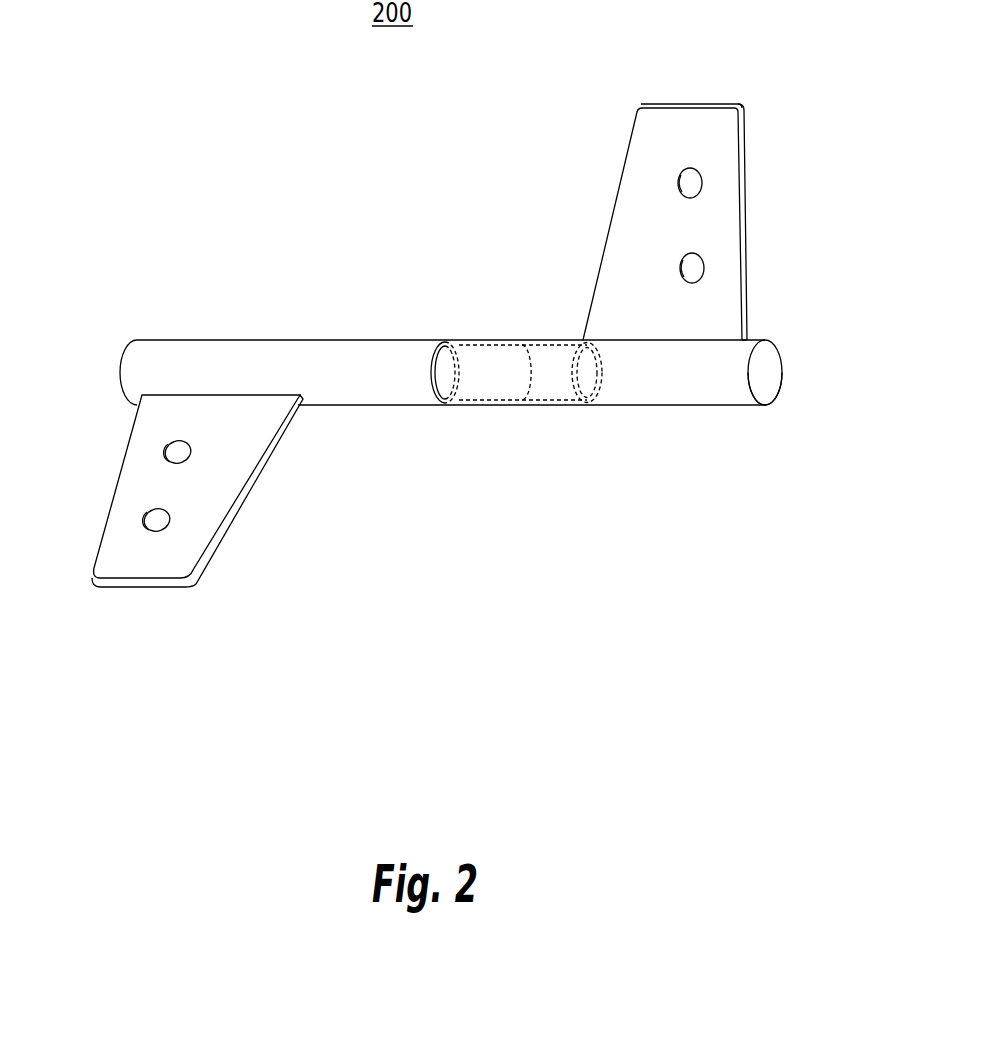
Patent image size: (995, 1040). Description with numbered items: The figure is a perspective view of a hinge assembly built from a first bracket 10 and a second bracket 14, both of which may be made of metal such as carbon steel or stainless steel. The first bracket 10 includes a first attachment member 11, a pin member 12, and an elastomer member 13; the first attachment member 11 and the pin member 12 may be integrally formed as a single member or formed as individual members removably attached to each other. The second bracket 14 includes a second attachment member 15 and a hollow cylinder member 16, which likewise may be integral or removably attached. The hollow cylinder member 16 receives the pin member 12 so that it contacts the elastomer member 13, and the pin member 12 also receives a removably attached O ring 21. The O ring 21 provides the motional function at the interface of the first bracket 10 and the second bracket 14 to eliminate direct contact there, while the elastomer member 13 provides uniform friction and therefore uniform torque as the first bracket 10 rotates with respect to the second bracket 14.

The first bracket 10 is at (133, 338).
The first attachment member 11 is at (180, 550).
The pin member 12 is at (492, 382).
The elastomer member 13 is at (540, 382).
The second bracket 14 is at (772, 410).
The second attachment member 15 is at (690, 132).
The hollow cylinder member 16 is at (517, 340).
The O ring 21 is at (420, 342).